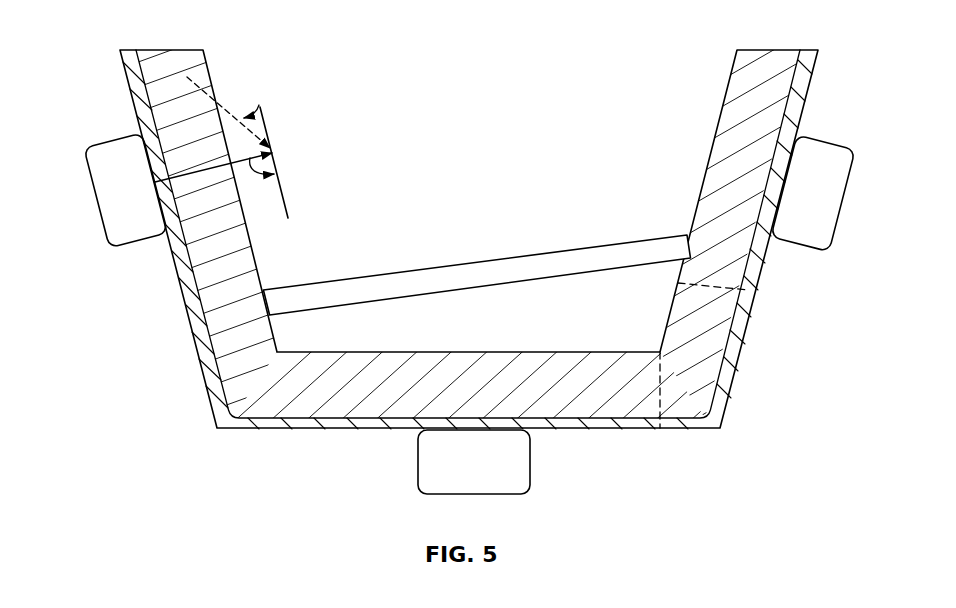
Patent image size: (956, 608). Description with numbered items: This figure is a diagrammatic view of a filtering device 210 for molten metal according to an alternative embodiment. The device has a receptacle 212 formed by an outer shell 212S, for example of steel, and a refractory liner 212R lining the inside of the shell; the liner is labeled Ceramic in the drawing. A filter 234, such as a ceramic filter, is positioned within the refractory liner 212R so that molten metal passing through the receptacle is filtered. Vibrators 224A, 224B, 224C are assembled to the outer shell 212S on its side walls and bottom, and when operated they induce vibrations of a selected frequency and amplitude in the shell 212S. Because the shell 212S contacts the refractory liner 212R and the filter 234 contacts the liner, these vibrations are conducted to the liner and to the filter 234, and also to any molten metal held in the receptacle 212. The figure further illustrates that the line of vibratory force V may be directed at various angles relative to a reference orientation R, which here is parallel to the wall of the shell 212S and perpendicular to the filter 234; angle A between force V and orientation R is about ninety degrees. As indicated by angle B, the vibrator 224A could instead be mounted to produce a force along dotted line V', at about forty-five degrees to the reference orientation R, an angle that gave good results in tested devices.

The filtering device 210 is at (141, 488).
The receptacle 212 is at (121, 68).
The outer shell 212S is at (198, 342).
The refractory liner 212R is at (233, 368).
The vibrator 224A is at (113, 215).
The vibrator 224B is at (518, 465).
The vibrator 224C is at (827, 151).
The filter 234 is at (497, 258).
The line of vibratory force V is at (190, 237).
The dotted line of vibratory force V' is at (228, 100).
The reference orientation R is at (289, 193).
The angle A is at (262, 178).
The angle B is at (259, 105).
The ceramic bottom Ceramic is at (340, 400).